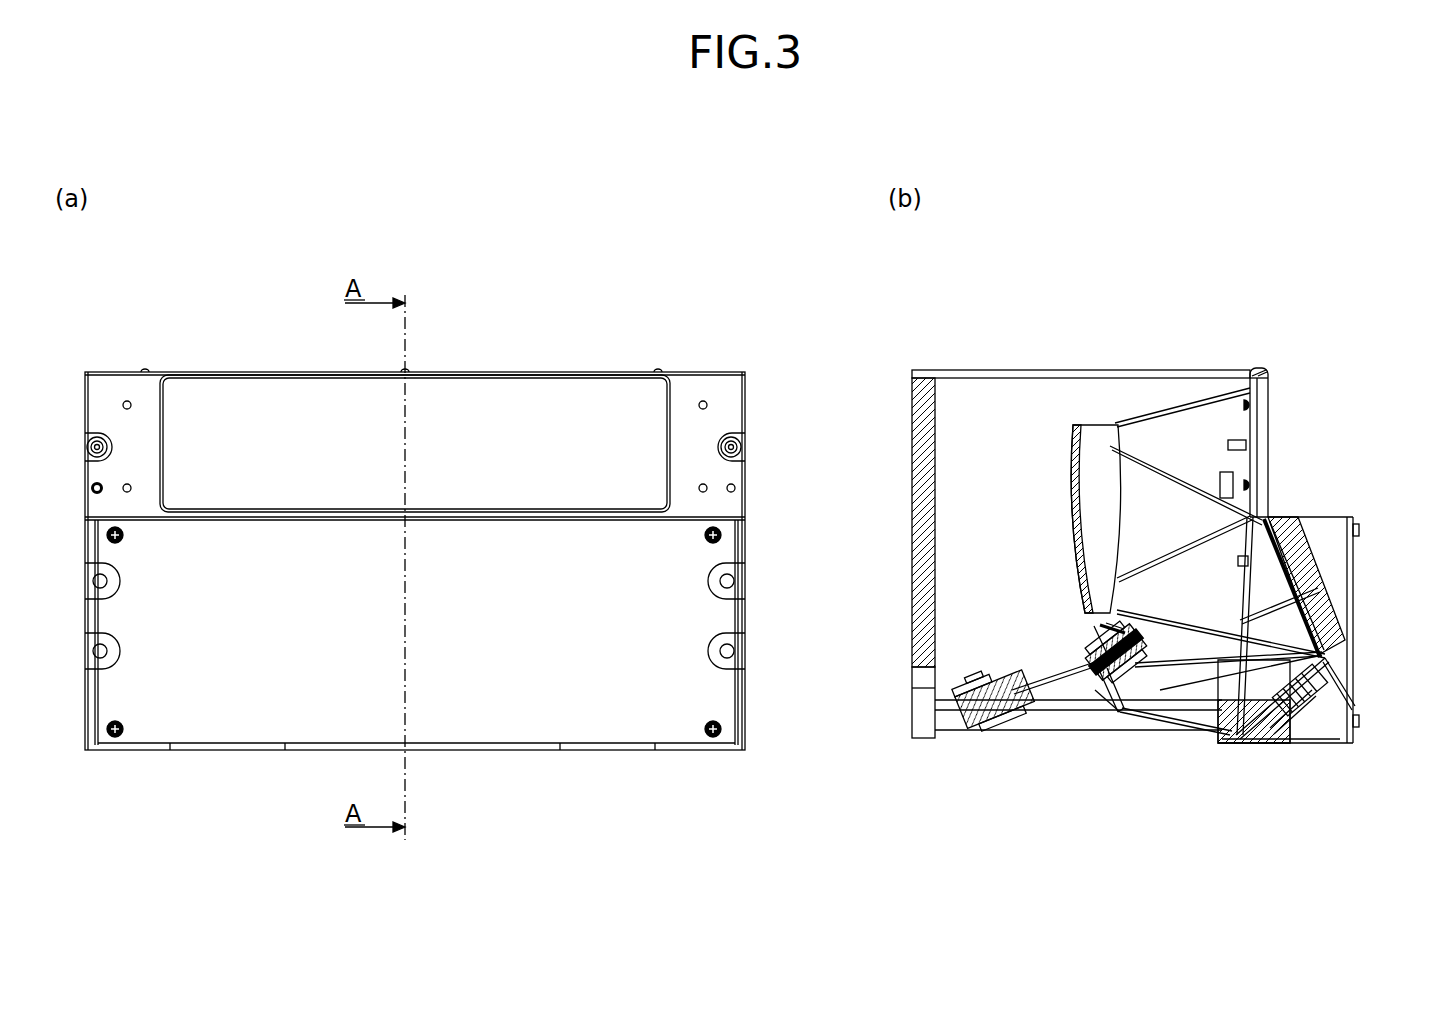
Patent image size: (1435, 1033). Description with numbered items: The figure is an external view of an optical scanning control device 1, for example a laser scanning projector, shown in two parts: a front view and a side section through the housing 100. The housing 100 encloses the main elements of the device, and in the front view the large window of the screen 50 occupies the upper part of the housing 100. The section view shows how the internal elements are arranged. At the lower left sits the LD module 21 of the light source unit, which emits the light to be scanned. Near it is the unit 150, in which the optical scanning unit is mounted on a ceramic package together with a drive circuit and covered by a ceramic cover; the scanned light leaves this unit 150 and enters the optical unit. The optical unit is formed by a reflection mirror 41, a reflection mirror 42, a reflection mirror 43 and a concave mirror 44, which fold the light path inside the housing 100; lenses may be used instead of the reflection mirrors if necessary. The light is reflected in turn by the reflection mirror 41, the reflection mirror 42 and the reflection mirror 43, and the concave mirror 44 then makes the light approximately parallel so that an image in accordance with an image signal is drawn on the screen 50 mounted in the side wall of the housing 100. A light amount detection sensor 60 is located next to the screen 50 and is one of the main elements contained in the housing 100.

The optical scanning control device 1 is at (103, 340).
The housing 100 is at (720, 372).
The screen 50 is at (583, 410).
The light amount detection sensor 60 is at (1233, 472).
The concave mirror 44 is at (1097, 428).
The reflection mirror 43 is at (1300, 588).
The reflection mirror 42 is at (1336, 742).
The reflection mirror 41 is at (1095, 730).
The LD module 21 is at (1000, 730).
The unit 150 is at (1086, 634).